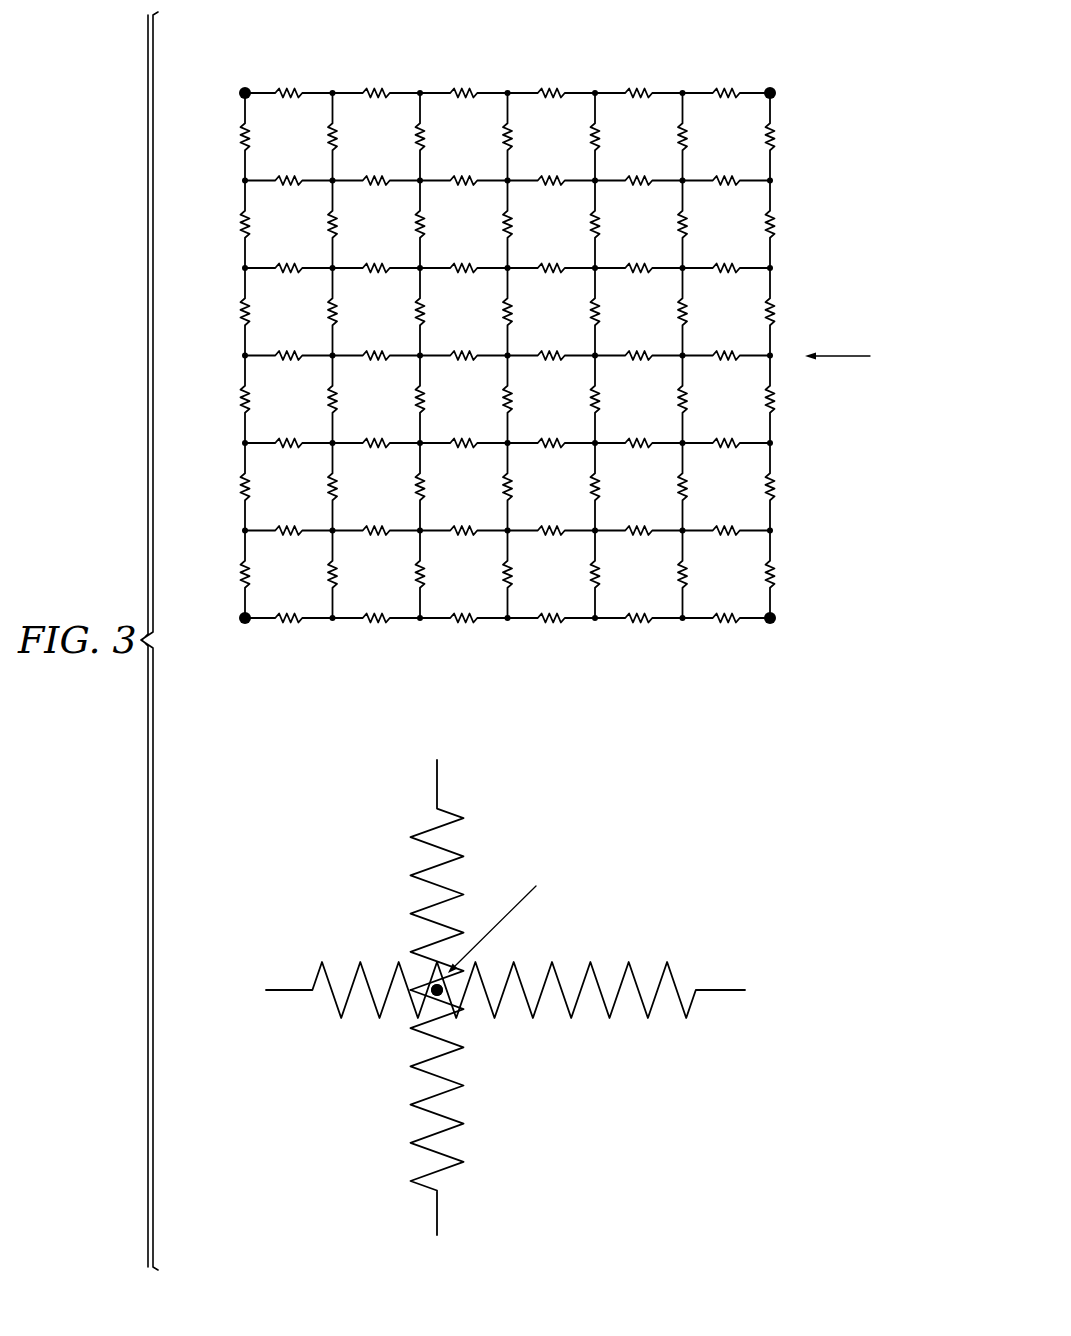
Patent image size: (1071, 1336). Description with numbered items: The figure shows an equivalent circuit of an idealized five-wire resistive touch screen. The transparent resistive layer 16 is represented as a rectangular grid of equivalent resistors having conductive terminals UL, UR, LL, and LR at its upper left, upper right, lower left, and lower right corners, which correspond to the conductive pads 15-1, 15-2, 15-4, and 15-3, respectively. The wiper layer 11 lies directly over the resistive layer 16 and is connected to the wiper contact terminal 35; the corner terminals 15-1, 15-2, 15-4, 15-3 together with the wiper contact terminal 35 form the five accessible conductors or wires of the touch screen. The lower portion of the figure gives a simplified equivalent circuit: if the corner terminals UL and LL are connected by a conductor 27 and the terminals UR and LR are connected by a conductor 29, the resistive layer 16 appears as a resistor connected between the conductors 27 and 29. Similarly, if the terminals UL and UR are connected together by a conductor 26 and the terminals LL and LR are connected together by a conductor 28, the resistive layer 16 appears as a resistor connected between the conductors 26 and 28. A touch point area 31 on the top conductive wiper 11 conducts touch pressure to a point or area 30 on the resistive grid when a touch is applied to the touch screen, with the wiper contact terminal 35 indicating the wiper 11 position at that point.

The conductive pad 15-1 is at (240, 86).
The conductive pad 15-2 is at (774, 86).
The conductive pad 15-3 is at (775, 623).
The conductive pad 15-4 is at (240, 623).
The transparent resistive layer 16 is at (565, 645).
The wiper contact terminal 35 is at (870, 356).
The wiper layer 11 is at (840, 357).
The conductor 26 is at (430, 762).
The conductor 27 is at (268, 985).
The conductor 28 is at (430, 1235).
The conductor 29 is at (741, 985).
The point or area on the resistive grid 30 is at (439, 998).
The touch point area 31 is at (437, 990).